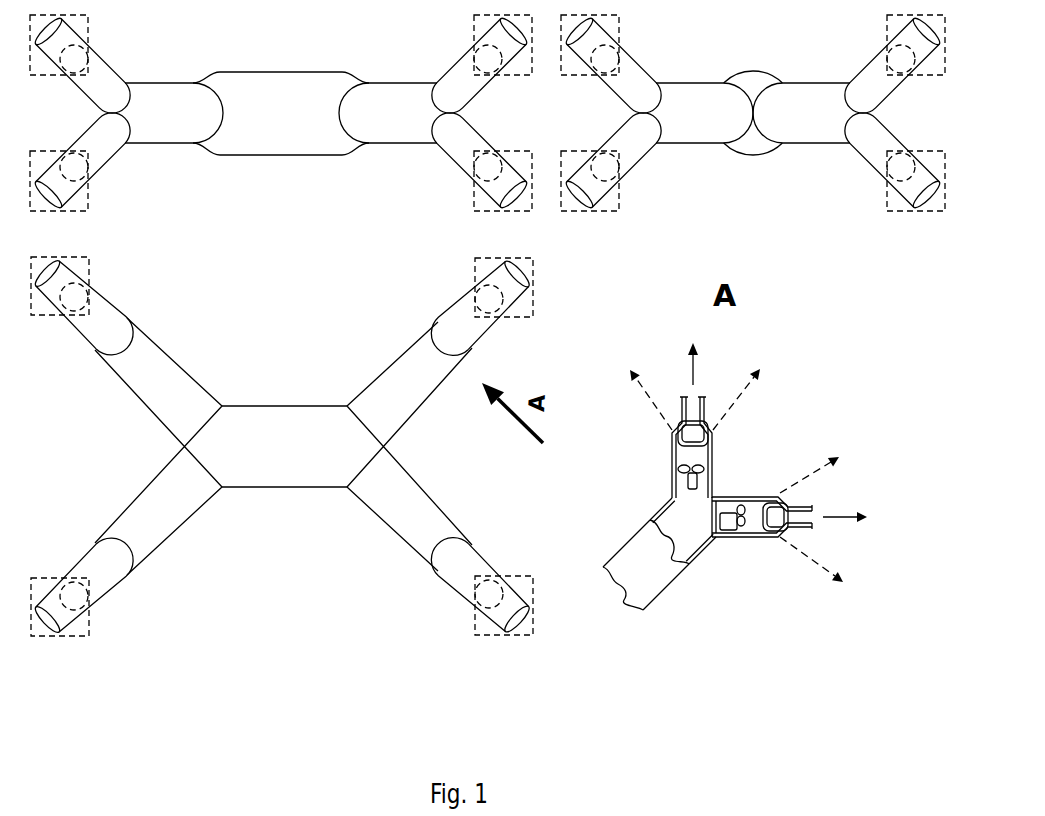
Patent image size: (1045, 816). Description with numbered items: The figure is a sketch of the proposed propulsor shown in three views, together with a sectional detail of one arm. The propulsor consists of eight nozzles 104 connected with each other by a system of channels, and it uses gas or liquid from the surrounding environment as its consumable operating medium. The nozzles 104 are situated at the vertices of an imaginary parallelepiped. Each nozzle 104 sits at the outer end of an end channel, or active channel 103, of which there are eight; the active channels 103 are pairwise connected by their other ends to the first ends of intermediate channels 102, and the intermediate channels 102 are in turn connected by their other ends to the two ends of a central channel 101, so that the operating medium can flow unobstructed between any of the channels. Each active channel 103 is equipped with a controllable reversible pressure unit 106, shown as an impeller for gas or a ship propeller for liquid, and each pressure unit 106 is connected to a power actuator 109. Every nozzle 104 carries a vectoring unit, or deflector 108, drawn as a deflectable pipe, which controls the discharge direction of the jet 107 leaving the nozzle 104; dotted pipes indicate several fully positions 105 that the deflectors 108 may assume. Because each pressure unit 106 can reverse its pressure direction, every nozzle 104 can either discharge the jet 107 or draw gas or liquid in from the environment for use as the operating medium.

The central channel 101 is at (235, 472).
The intermediate channel 102 is at (380, 508).
The end channel (active channel) 103 is at (458, 578).
The nozzle 104 is at (493, 275).
The fully positions 105 is at (527, 604).
The controllable reversible pressure unit 106 is at (747, 498).
The jet 107 is at (842, 516).
The vectoring unit (deflector) 108 is at (800, 518).
The power actuator 109 is at (720, 523).